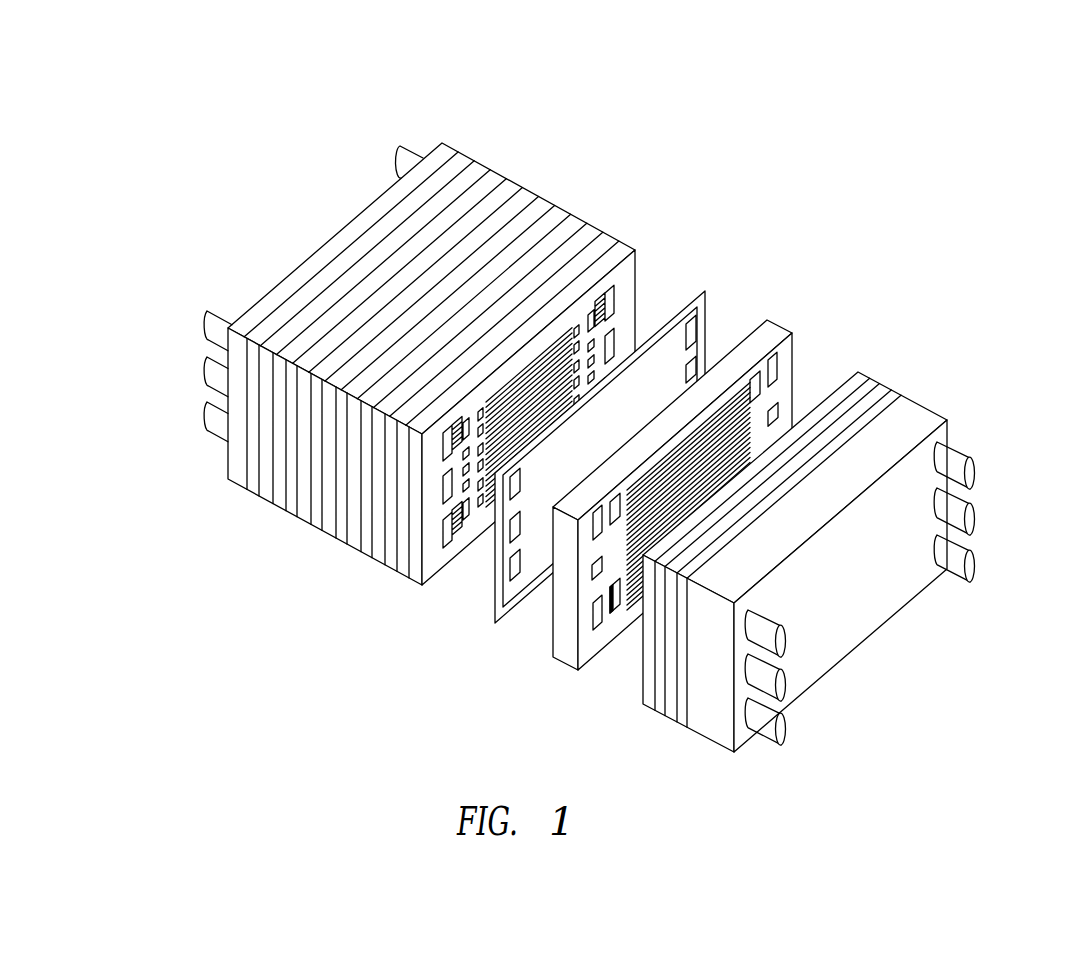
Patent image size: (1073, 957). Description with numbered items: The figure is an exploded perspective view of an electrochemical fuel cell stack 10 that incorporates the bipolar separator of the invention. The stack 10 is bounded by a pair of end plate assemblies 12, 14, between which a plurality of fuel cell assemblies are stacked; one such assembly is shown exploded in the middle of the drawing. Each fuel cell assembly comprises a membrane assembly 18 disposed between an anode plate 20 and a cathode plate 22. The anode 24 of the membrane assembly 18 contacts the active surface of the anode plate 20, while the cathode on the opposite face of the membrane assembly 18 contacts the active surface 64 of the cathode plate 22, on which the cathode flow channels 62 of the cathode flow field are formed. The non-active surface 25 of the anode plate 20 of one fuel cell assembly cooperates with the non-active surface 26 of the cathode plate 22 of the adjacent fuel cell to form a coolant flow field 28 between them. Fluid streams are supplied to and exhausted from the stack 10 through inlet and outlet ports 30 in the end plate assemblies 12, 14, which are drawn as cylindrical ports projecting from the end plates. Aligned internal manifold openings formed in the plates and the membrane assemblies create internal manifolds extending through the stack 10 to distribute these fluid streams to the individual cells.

The fuel cell stack 10 is at (255, 103).
The end plate assembly 12 is at (315, 265).
The end plate assembly 14 is at (908, 422).
The membrane assembly 18 is at (680, 313).
The anode plate 20 is at (778, 323).
The cathode plate 22 is at (623, 280).
The anode 24 is at (653, 363).
The non-active surface 25 is at (783, 360).
The non-active surface 26 is at (838, 385).
The coolant flow field 28 is at (633, 573).
The inlet and outlet ports 30 is at (222, 330).
The cathode flow channels 62 is at (538, 365).
The active surface 64 is at (636, 251).